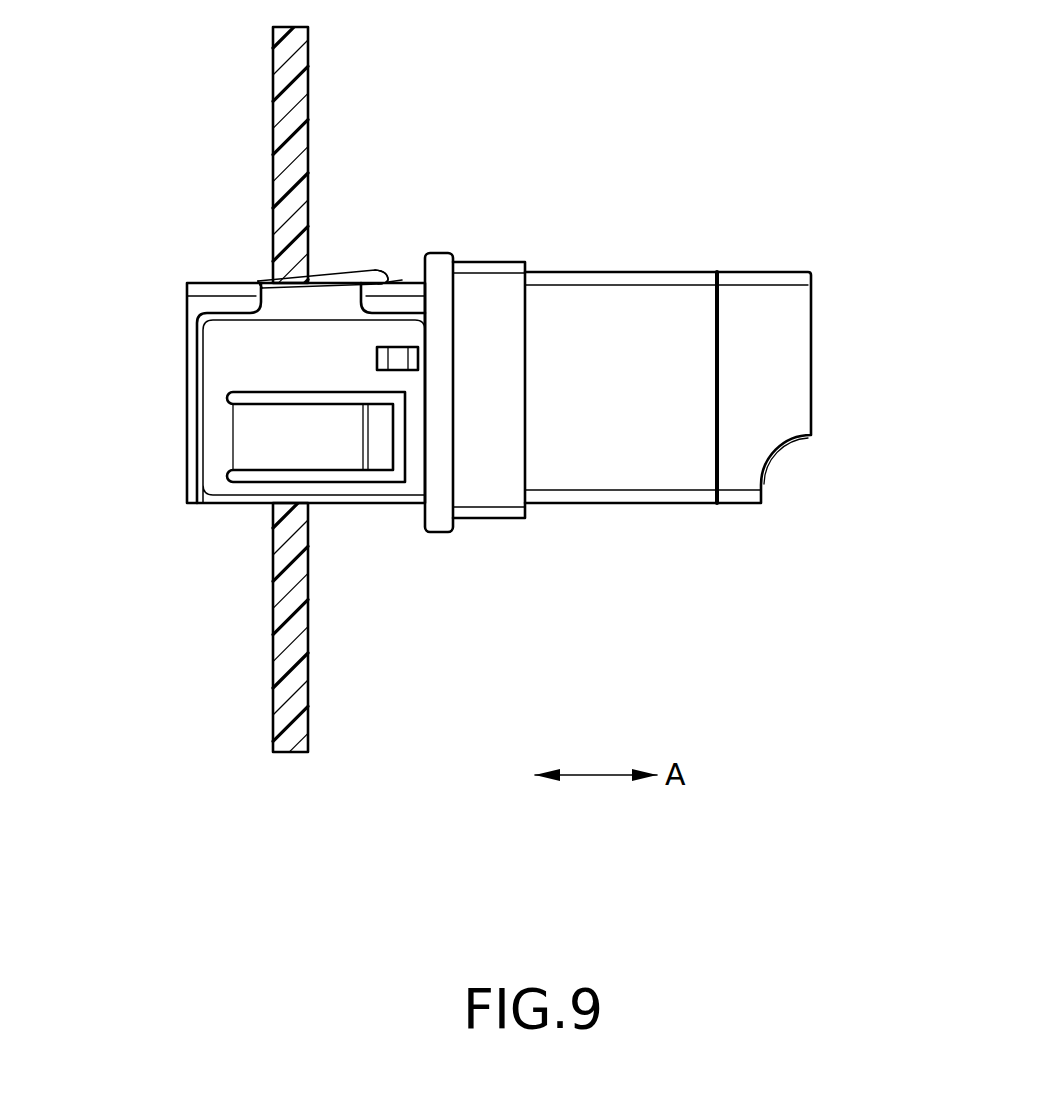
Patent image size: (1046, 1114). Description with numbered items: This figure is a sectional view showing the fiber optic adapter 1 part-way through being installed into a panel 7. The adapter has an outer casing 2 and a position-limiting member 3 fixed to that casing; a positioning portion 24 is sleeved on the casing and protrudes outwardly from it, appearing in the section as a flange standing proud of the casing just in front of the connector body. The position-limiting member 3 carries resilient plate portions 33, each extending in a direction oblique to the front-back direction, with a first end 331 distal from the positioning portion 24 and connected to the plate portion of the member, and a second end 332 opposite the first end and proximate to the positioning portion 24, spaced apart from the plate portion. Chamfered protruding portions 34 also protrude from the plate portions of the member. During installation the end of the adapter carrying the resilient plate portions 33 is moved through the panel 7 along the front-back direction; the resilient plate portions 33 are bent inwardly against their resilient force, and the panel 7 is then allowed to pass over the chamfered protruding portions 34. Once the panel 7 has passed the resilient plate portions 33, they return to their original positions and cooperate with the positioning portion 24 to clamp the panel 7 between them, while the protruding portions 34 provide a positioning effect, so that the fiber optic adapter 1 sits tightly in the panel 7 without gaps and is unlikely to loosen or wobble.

The fiber optic adapter 1 is at (696, 150).
The outer casing 2 is at (507, 228).
The position-limiting member 3 is at (183, 341).
The panel 7 is at (278, 710).
The positioning portion 24 is at (442, 522).
The resilient plate portion 33 is at (337, 250).
The protruding portion 34 is at (402, 278).
The first end 331 is at (268, 280).
The second end 332 is at (380, 272).